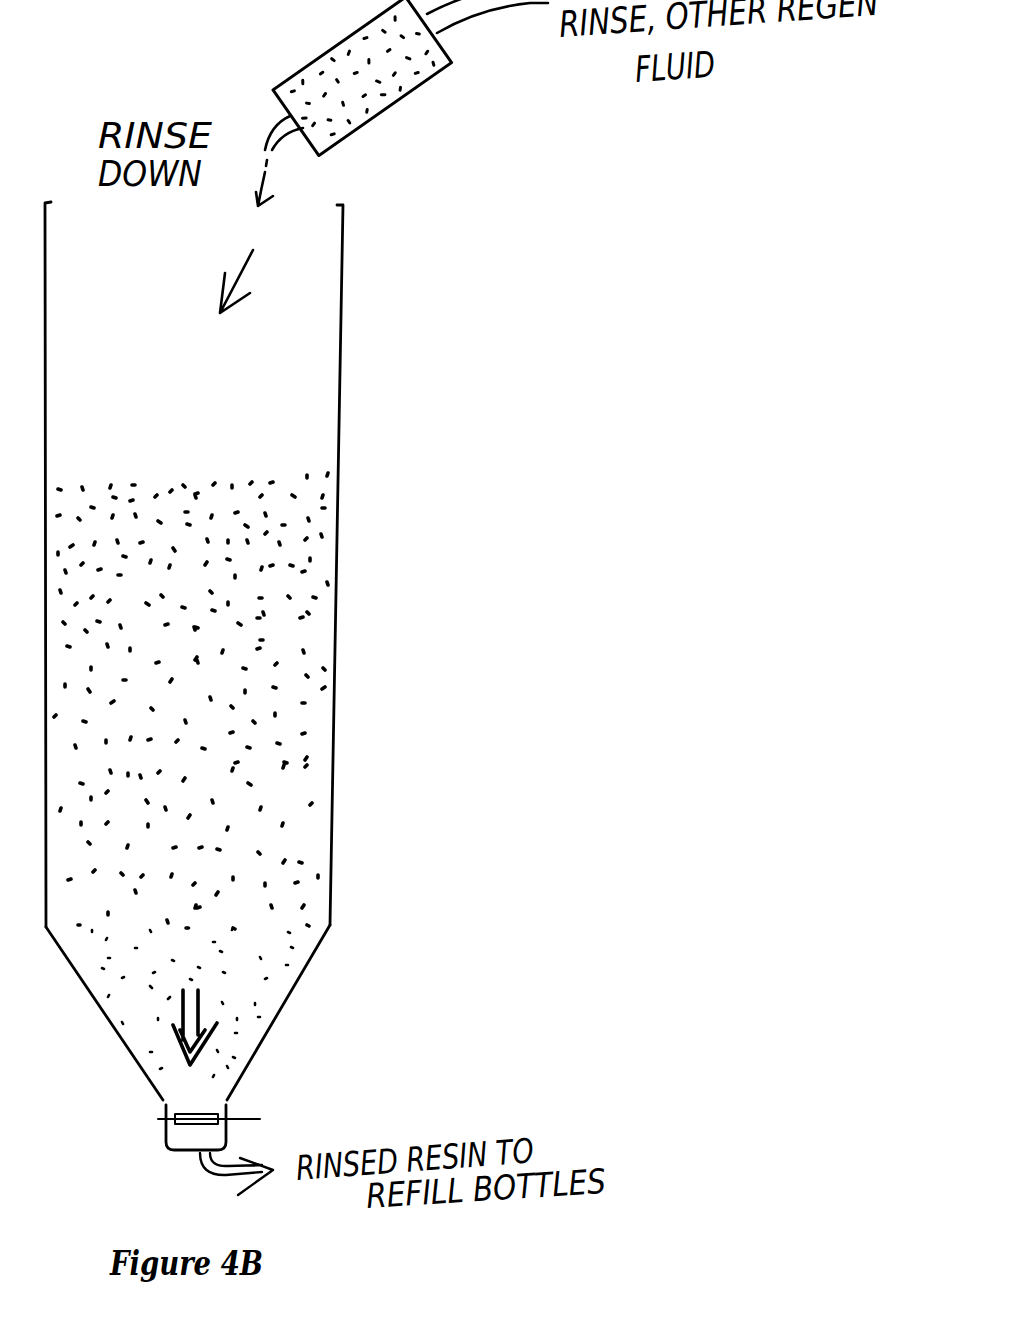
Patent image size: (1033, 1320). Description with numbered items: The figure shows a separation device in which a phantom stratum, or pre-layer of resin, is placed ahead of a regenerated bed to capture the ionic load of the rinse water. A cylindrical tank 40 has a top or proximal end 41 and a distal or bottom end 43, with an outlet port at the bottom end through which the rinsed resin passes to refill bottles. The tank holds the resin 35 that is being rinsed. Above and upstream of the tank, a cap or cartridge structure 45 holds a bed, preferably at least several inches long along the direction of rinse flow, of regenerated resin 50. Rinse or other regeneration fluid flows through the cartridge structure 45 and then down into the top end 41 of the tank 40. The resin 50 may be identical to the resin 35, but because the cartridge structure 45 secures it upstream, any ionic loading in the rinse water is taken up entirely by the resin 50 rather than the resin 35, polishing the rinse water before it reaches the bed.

The resin 35 is at (298, 668).
The cylindrical tank 40 is at (338, 511).
The top or proximal end 41 is at (386, 282).
The distal or bottom end 43 is at (295, 1015).
The cap or cartridge structure 45 is at (296, 40).
The regenerated resin 50 is at (375, 96).